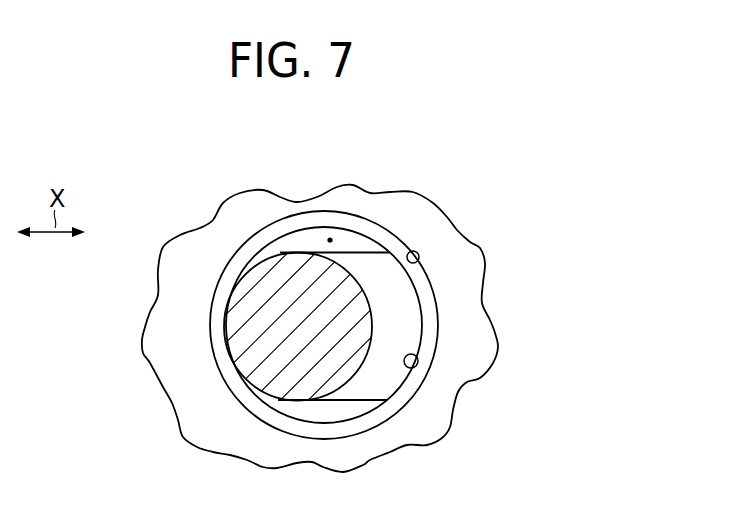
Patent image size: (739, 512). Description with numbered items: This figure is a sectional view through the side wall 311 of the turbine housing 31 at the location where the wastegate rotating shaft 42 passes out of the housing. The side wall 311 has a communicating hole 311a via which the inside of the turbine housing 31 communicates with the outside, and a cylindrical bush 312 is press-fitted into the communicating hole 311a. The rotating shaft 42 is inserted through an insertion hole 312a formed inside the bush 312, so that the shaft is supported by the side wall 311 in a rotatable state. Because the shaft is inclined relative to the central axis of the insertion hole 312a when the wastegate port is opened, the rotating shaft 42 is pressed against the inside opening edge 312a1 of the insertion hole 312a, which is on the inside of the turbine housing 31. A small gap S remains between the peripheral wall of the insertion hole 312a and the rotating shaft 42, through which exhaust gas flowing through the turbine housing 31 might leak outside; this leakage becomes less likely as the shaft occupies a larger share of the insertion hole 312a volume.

The turbine housing 31 is at (392, 328).
The side wall 311 is at (497, 337).
The communicating hole 311a is at (418, 251).
The bush 312 is at (427, 293).
The insertion hole 312a is at (416, 356).
The inside opening edge 312a1 is at (242, 378).
The rotating shaft 42 is at (261, 332).
The gap S is at (330, 240).